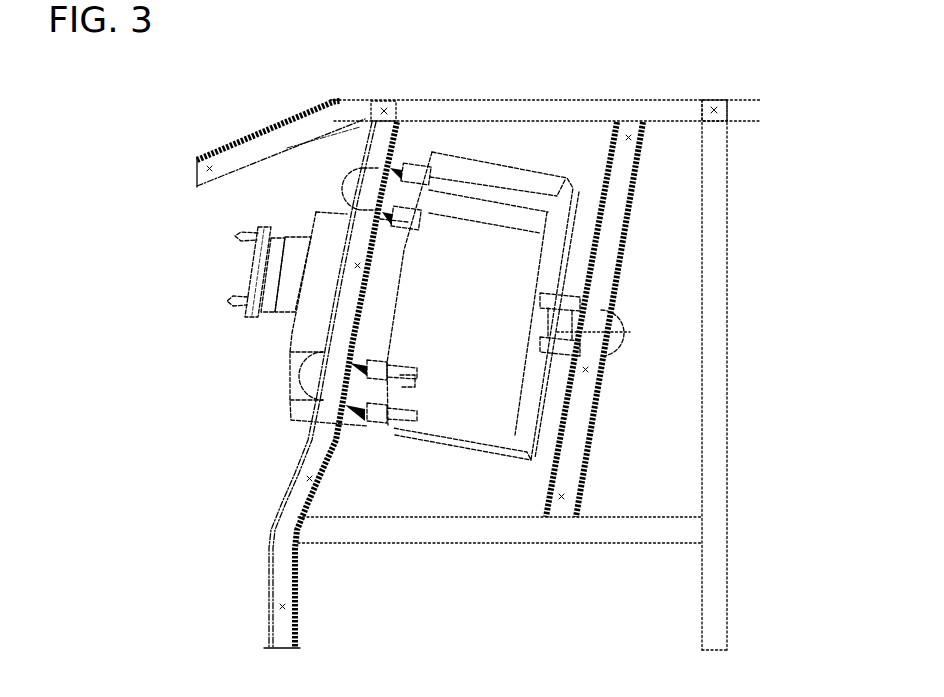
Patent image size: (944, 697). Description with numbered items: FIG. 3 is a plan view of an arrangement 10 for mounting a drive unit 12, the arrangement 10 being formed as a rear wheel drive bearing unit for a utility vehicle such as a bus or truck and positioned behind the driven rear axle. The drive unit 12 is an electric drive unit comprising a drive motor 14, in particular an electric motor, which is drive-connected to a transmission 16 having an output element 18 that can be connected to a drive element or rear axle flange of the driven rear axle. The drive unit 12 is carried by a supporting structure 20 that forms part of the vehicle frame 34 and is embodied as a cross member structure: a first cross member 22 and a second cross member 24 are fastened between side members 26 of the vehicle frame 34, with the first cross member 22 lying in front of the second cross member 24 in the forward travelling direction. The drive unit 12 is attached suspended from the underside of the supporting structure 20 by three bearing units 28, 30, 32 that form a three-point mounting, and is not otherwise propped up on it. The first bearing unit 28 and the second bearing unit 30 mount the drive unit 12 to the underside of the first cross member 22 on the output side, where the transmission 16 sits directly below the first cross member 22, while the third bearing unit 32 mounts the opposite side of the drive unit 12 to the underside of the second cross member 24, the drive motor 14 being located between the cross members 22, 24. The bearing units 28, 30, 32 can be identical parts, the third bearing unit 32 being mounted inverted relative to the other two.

The arrangement 10 is at (480, 48).
The drive unit 12 is at (468, 476).
The drive motor 14 is at (507, 182).
The transmission 16 is at (302, 369).
The output element 18 is at (248, 277).
The supporting structure 20 is at (660, 145).
The first cross member 22 is at (365, 145).
The second cross member 24 is at (568, 452).
The side members 26 is at (453, 110).
The first bearing unit 28 is at (347, 180).
The second bearing unit 30 is at (305, 402).
The third bearing unit 32 is at (625, 338).
The vehicle frame 34 is at (744, 501).